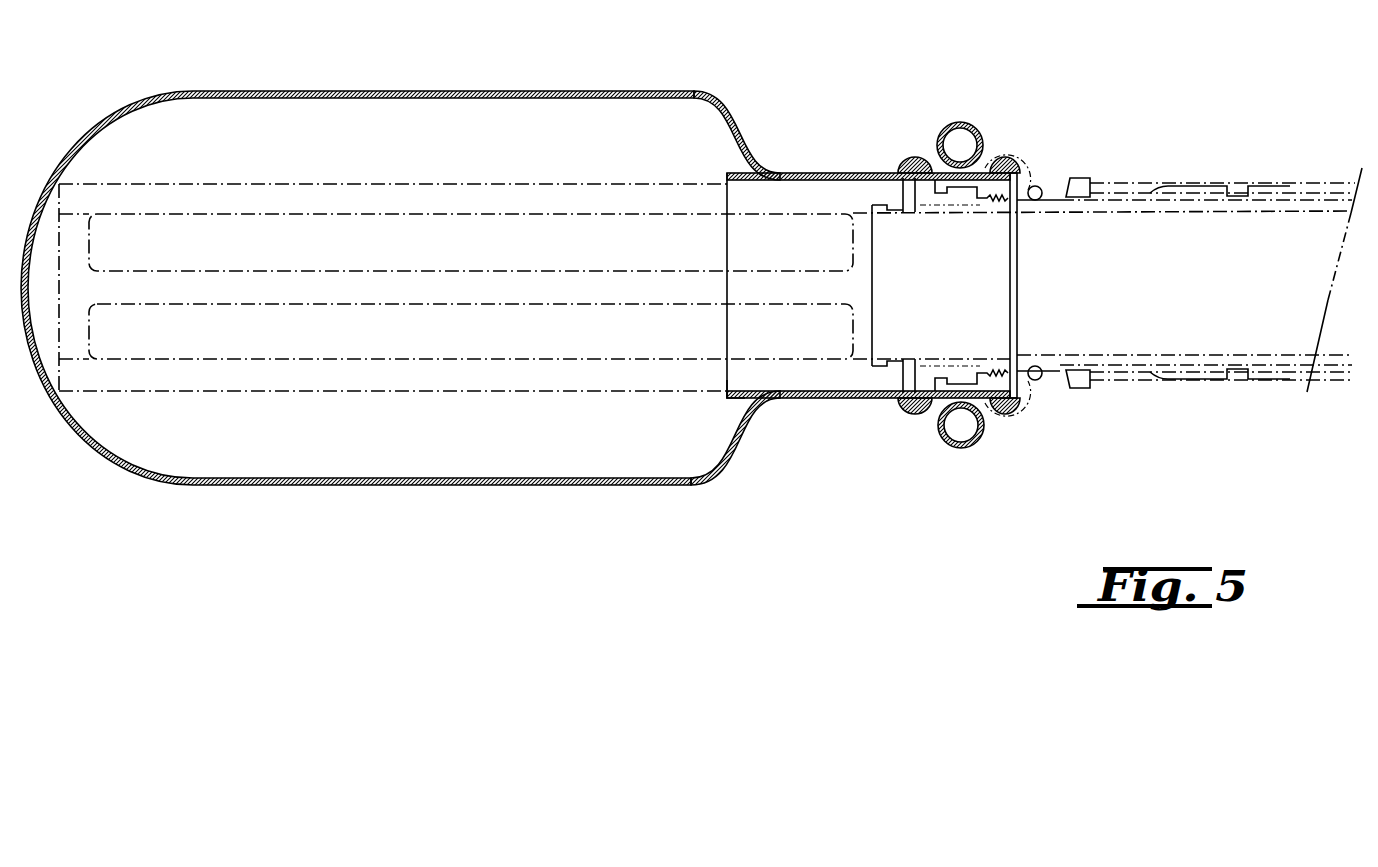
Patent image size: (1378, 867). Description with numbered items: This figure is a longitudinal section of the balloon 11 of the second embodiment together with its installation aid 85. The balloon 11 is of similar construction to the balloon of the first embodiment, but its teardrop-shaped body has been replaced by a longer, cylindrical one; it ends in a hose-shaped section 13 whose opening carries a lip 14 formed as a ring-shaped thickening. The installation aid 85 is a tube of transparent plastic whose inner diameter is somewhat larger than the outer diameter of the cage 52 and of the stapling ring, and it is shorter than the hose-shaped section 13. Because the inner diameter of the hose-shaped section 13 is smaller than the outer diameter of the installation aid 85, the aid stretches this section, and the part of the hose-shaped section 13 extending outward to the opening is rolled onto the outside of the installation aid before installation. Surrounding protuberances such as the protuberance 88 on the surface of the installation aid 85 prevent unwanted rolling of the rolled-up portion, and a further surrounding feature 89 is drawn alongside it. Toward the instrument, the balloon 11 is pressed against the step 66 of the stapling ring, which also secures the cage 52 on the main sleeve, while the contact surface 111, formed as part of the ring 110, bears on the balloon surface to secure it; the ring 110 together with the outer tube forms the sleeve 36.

The balloon 11 is at (613, 91).
The cage 52 is at (398, 172).
The hose-shaped section 13 is at (840, 173).
The lip 14 is at (958, 165).
The step 66 is at (1037, 186).
The installation aid 85 is at (728, 393).
The surrounding protuberance 88 is at (993, 405).
The collar 89 is at (909, 405).
The ring 110 is at (1086, 172).
The contact surface 111 is at (1062, 202).
The sleeve 36 is at (1178, 174).